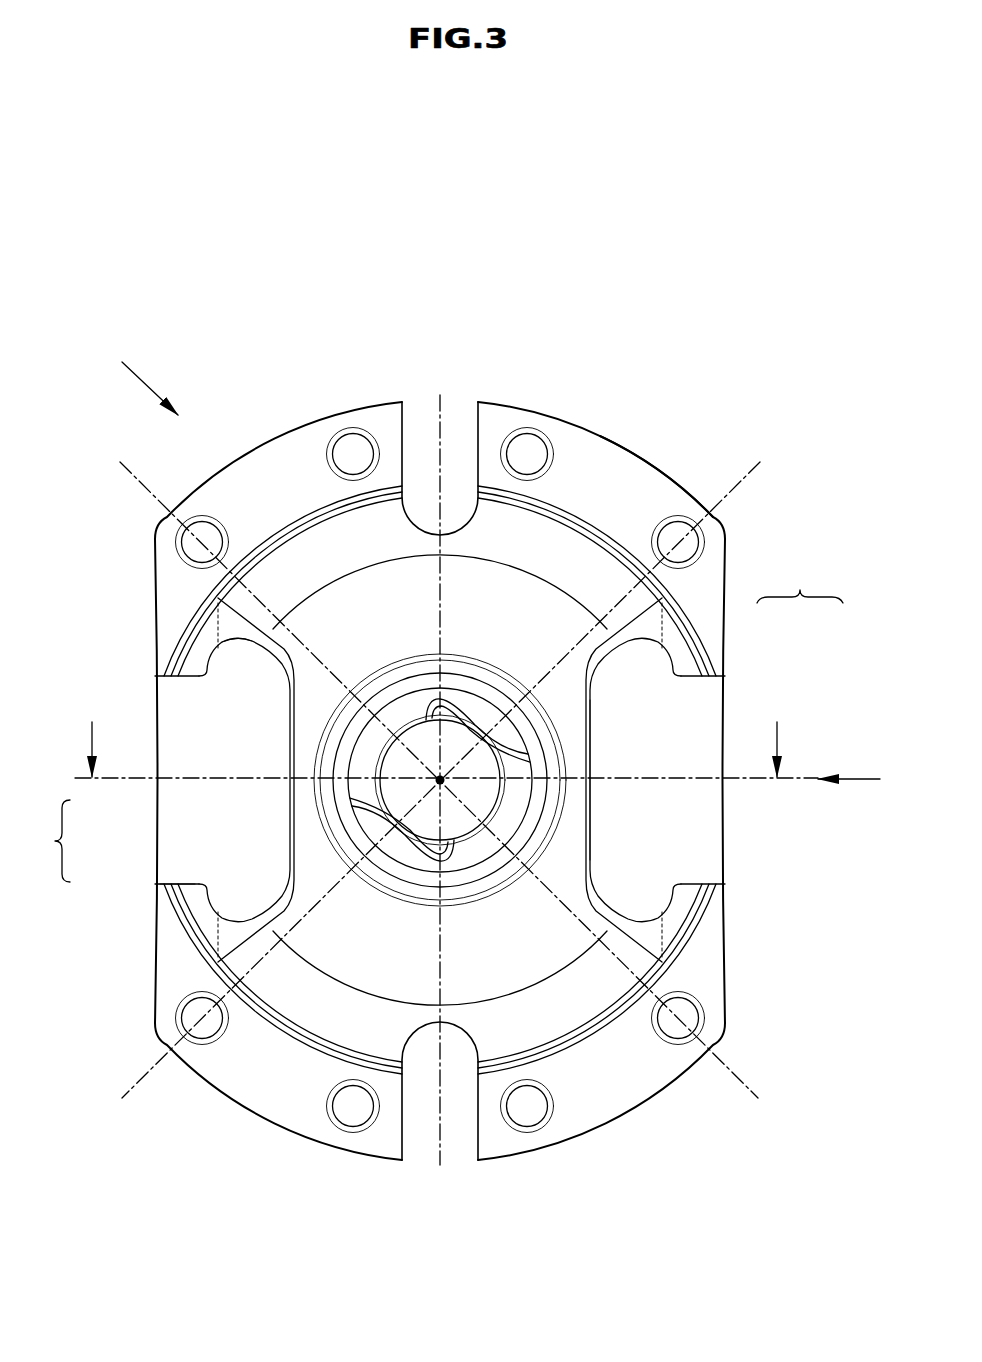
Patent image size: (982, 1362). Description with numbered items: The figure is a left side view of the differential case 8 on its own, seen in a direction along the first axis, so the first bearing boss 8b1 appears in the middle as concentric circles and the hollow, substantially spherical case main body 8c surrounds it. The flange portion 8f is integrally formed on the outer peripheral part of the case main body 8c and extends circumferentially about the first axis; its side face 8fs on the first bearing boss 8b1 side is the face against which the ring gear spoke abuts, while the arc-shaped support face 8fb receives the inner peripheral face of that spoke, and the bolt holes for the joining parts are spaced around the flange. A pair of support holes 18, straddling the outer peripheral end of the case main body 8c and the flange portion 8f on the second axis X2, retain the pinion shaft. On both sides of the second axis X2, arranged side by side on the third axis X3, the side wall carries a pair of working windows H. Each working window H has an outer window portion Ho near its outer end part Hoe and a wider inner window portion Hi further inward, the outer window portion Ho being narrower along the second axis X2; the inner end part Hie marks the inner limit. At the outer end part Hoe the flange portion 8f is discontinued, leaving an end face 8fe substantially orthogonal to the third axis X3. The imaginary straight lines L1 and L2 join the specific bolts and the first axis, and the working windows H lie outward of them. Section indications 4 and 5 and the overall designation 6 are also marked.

The pump unit 6 is at (134, 377).
The differential case 8 is at (307, 1152).
The flange portion 8f is at (646, 447).
The side face 8fs is at (297, 455).
The arc-shaped support face 8fb is at (268, 553).
The end face 8fe is at (154, 946).
The case main body 8c is at (497, 572).
The first bearing boss 8b1 is at (430, 655).
The support hole 18 is at (477, 437).
The imaginary straight line L1 is at (322, 673).
The imaginary straight line L2 is at (540, 667).
The working window H is at (440, 721).
The inner window portion Hi is at (233, 914).
The outer window portion Ho is at (182, 878).
The inner end part Hie is at (289, 768).
The outer end part Hoe is at (153, 710).
The second axis X2 is at (447, 955).
The third axis X3 is at (622, 792).
The section line IV-IV 4 is at (430, 746).
The section line V-V 5 is at (849, 763).